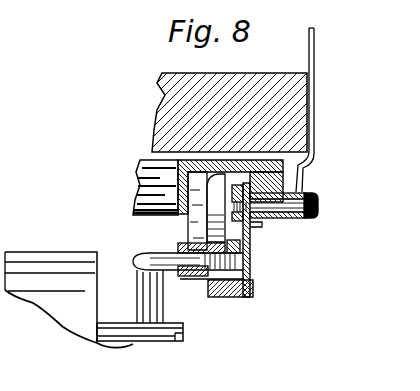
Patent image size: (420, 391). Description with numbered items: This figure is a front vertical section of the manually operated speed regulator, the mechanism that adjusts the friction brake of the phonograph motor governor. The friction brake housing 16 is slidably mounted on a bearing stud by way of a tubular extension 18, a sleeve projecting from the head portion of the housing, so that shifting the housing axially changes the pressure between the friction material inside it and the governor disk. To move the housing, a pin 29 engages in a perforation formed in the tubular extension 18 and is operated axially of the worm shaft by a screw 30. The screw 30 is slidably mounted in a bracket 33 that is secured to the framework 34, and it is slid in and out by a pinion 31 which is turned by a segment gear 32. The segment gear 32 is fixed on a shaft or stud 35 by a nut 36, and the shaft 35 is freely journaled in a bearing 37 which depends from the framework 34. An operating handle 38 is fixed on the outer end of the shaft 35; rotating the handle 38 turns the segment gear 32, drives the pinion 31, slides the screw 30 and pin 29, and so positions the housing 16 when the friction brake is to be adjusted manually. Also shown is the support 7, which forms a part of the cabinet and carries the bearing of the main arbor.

The support 7 is at (0, 87).
The friction brake housing 16 is at (34, 257).
The tubular extension 18 is at (133, 344).
The pin 29 is at (163, 305).
The screw 30 is at (156, 258).
The pinion 31 is at (250, 247).
The segment gear 32 is at (250, 293).
The bracket 33 is at (182, 216).
The framework 34 is at (134, 183).
The shaft or stud 35 is at (318, 203).
The nut 36 is at (262, 228).
The bearing 37 is at (282, 222).
The operating handle 38 is at (315, 60).